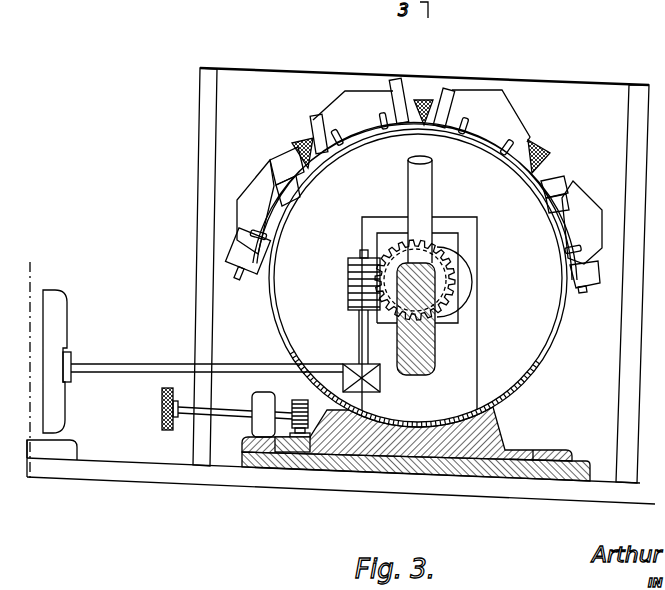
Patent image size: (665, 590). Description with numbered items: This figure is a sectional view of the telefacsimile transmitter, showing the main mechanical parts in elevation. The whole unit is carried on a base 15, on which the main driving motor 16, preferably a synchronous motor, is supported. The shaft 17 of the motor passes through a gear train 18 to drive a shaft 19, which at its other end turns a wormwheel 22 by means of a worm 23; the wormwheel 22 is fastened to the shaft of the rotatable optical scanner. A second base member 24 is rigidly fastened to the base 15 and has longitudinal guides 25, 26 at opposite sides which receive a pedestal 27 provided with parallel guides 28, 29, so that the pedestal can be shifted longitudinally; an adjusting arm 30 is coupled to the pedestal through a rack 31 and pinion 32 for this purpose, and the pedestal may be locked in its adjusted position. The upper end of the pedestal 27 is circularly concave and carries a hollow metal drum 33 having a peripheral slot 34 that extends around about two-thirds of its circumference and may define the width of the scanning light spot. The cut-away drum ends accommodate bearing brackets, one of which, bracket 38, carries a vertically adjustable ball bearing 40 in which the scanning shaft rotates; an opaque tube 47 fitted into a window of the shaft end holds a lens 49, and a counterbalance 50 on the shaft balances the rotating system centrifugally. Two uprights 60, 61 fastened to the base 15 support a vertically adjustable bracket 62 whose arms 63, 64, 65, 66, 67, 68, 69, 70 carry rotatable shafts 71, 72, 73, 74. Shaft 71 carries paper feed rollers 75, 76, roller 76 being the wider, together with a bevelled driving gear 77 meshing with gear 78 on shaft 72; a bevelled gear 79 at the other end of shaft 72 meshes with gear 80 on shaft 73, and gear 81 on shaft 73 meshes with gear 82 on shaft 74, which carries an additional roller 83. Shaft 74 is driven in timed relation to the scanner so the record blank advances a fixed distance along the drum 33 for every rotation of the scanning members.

The base 15 is at (492, 497).
The main driving motor 16 is at (40, 300).
The shaft 17 is at (85, 366).
The gear train 18 is at (378, 385).
The shaft 19 is at (358, 346).
The wormwheel 22 is at (440, 262).
The worm 23 is at (350, 288).
The base member 24 is at (273, 462).
The longitudinal guide 25 is at (242, 465).
The longitudinal guide 26 is at (545, 455).
The pedestal 27 is at (430, 468).
The parallel guide 28 is at (283, 455).
The parallel guide 29 is at (535, 462).
The adjusting arm 30 is at (182, 414).
The rack 31 is at (305, 440).
The pinion 32 is at (292, 406).
The hollow metal drum 33 is at (526, 368).
The peripheral slot 34 is at (548, 350).
The bearing bracket 38 is at (470, 320).
The ball bearing 40 is at (447, 317).
The opaque tube 47 is at (408, 188).
The lens 49 is at (425, 160).
The counterbalance 50 is at (435, 356).
The upright 60 is at (200, 290).
The upright 61 is at (626, 330).
The bracket 62 is at (247, 80).
The arm 63 is at (250, 280).
The arm 64 is at (278, 170).
The arm 65 is at (316, 128).
The arm 66 is at (396, 84).
The arm 67 is at (451, 98).
The arm 68 is at (529, 138).
The arm 69 is at (566, 184).
The arm 70 is at (592, 265).
The shaft 71 is at (279, 203).
The shaft 72 is at (340, 138).
The shaft 73 is at (464, 136).
The shaft 74 is at (566, 240).
The paper feed roller 75 is at (237, 236).
The paper feed roller 76 is at (278, 190).
The bevelled driving gear 77 is at (300, 155).
The bevelled gear 78 is at (306, 160).
The bevelled gear 79 is at (422, 100).
The bevelled gear 80 is at (430, 104).
The bevelled gear 81 is at (538, 165).
The bevelled gear 82 is at (548, 170).
The roller 83 is at (563, 197).